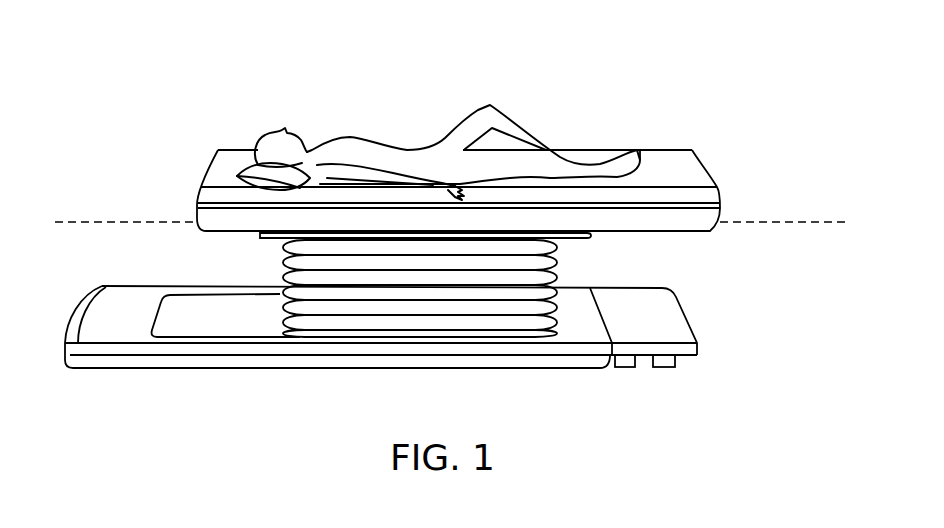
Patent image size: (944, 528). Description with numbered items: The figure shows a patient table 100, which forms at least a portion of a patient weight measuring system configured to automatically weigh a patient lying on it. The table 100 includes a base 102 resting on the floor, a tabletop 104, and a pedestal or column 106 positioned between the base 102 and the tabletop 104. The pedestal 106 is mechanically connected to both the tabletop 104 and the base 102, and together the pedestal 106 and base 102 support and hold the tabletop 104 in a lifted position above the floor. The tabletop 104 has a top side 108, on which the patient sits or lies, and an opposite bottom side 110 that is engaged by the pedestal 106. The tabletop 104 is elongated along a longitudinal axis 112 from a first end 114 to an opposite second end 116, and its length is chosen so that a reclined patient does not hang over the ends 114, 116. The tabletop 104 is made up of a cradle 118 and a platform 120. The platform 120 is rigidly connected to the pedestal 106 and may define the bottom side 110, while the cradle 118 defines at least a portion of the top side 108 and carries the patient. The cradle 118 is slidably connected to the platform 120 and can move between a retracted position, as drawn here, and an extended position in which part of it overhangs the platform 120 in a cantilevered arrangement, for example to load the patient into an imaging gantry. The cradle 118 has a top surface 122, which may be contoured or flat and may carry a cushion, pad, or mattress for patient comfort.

The patient table 100 is at (193, 70).
The base 102 is at (188, 370).
The tabletop 104 is at (735, 187).
The pedestal or column 106 is at (280, 258).
The top side 108 is at (595, 158).
The bottom side 110 is at (643, 237).
The longitudinal axis 112 is at (72, 222).
The first end 114 is at (198, 192).
The second end 116 is at (713, 182).
The cradle 118 is at (673, 163).
The platform 120 is at (693, 224).
The top surface 122 is at (233, 163).